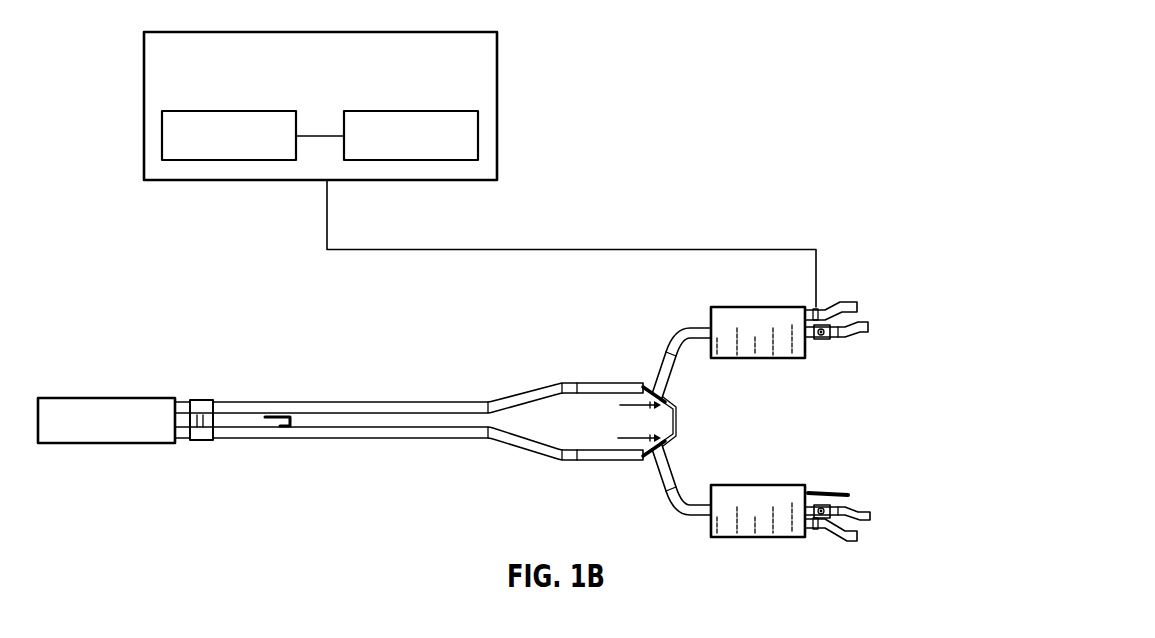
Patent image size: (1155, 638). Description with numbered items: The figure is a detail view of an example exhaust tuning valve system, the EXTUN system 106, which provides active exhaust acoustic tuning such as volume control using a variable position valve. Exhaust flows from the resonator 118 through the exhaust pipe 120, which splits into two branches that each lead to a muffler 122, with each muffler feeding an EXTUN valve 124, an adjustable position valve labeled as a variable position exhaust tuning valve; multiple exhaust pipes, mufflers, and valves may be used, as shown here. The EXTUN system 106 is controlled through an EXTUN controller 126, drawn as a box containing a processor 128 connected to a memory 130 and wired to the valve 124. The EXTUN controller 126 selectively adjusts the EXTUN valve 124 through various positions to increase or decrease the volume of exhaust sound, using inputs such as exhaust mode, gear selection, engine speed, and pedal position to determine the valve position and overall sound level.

The EXTUN system 106 is at (750, 79).
The resonator 118 is at (128, 398).
The exhaust pipe 120 is at (558, 383).
The muffler 122 is at (748, 307).
The EXTUN valve 124 is at (820, 339).
The EXTUN controller 126 is at (480, 153).
The processor 128 is at (230, 111).
The memory 130 is at (413, 111).